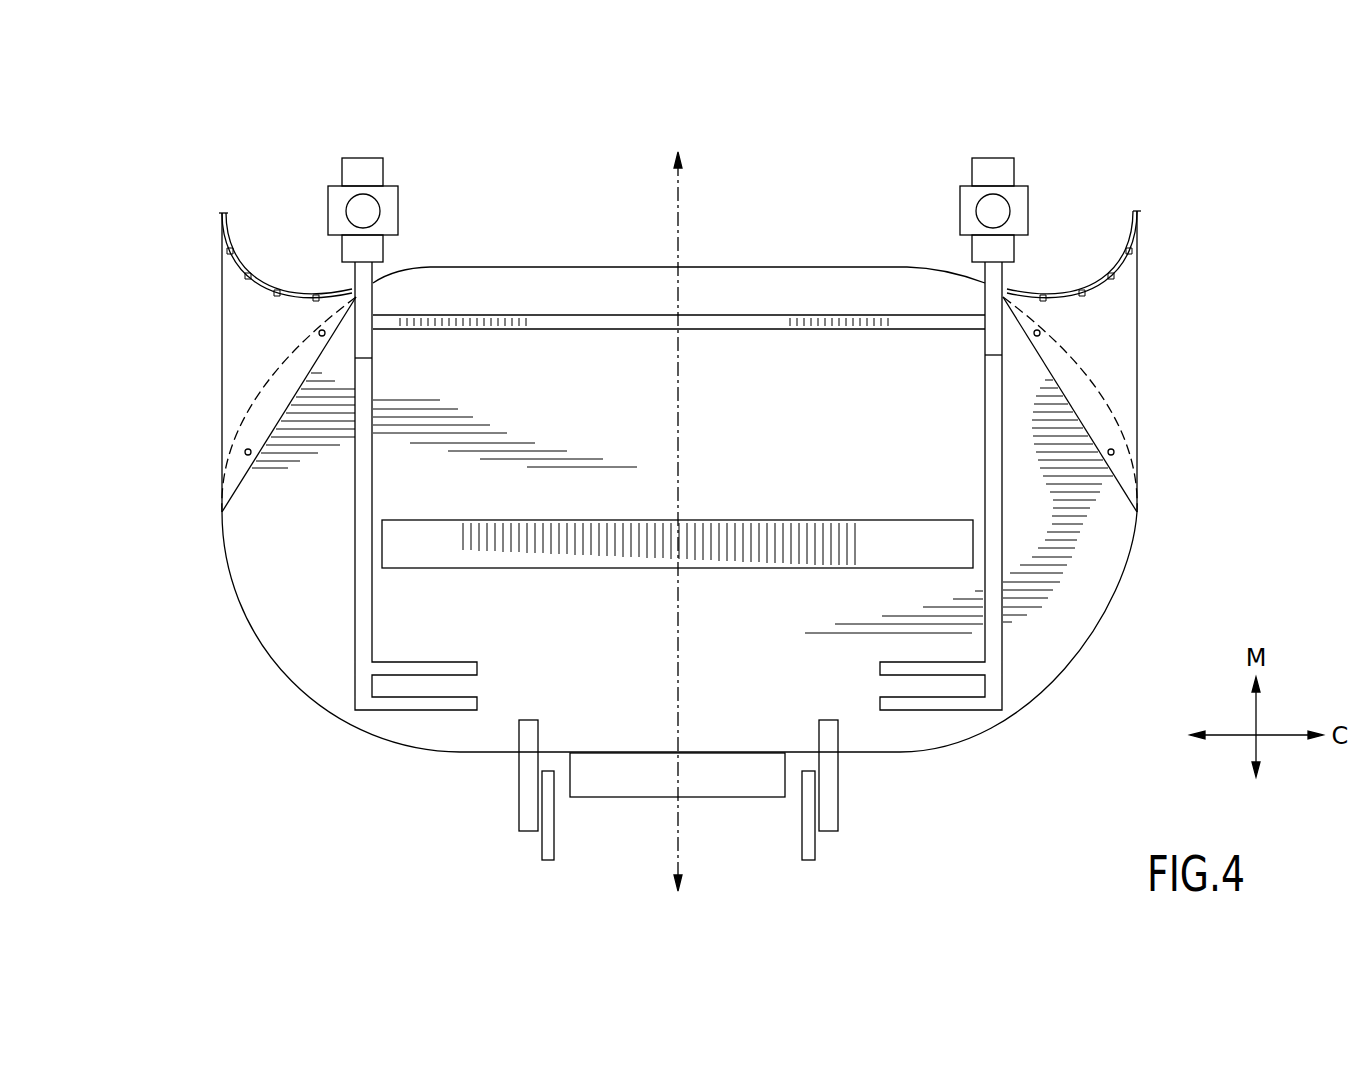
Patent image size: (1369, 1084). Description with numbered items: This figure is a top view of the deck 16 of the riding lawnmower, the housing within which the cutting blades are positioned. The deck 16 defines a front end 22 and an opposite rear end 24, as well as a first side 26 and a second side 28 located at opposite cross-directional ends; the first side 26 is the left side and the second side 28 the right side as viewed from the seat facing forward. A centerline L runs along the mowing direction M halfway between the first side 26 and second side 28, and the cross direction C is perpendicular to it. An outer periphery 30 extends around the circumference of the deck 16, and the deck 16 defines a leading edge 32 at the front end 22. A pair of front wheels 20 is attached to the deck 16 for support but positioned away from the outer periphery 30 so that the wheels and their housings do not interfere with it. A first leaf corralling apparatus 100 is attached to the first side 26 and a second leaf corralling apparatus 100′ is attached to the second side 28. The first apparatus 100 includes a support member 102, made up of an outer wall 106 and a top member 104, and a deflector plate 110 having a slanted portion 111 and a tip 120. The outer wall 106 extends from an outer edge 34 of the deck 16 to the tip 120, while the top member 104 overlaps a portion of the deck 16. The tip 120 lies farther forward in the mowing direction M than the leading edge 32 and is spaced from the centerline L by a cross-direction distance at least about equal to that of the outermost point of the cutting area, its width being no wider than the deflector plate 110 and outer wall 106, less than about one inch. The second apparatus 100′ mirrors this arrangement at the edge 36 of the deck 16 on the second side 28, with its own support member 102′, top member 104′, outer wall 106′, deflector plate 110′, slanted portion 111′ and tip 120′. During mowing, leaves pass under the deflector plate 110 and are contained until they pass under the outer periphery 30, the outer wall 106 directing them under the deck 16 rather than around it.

The deck 16 is at (138, 170).
The front wheels 20 is at (368, 172).
The front end 22 is at (772, 243).
The rear end 24 is at (608, 833).
The first side 26 is at (122, 542).
The second side 28 is at (1244, 514).
The outer periphery 30 is at (428, 265).
The leading edge 32 is at (575, 265).
The outer edge 34 is at (221, 522).
The right corner 36 is at (1140, 517).
The first leaf corralling apparatus 100 is at (145, 378).
The support member 102 is at (232, 400).
The top member 104 is at (235, 355).
The outer wall 106 is at (222, 312).
The deflector plate 110 is at (280, 287).
The slanted portion 111 is at (247, 253).
The tip 120 is at (222, 208).
The second leaf corralling apparatus 100′ is at (1196, 245).
The diagonal brace 102′ is at (1122, 387).
The flexible member 104′ is at (1122, 338).
The side panel 106′ is at (1137, 286).
The curved rail 110′ is at (1051, 288).
The fasteners 111′ is at (1106, 250).
The upper end 120′ is at (1134, 207).